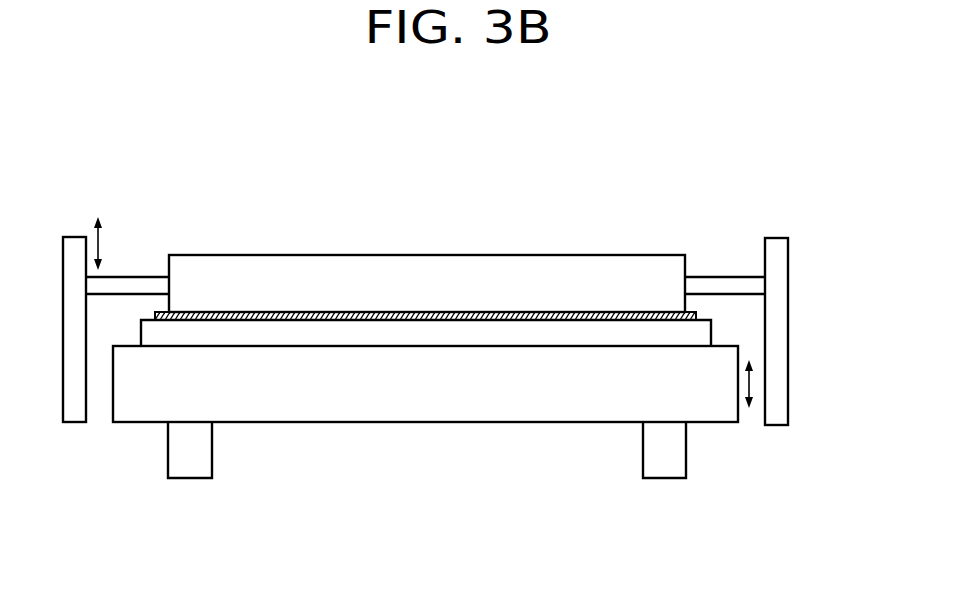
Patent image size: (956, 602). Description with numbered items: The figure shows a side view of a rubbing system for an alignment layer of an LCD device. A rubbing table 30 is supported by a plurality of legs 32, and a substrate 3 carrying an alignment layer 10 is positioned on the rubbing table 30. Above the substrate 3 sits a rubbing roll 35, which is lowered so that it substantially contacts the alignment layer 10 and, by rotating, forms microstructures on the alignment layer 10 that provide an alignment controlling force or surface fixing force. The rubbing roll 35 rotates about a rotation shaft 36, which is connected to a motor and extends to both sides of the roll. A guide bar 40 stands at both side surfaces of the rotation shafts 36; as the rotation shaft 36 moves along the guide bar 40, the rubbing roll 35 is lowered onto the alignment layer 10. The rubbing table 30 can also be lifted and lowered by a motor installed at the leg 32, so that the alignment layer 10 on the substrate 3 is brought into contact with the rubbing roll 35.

The substrate 3 is at (395, 333).
The alignment layer 10 is at (548, 313).
The rubbing table 30 is at (492, 407).
The legs 32 is at (677, 454).
The rubbing roll 35 is at (465, 275).
The rotation shaft 36 is at (725, 288).
The guide bar 40 is at (778, 258).